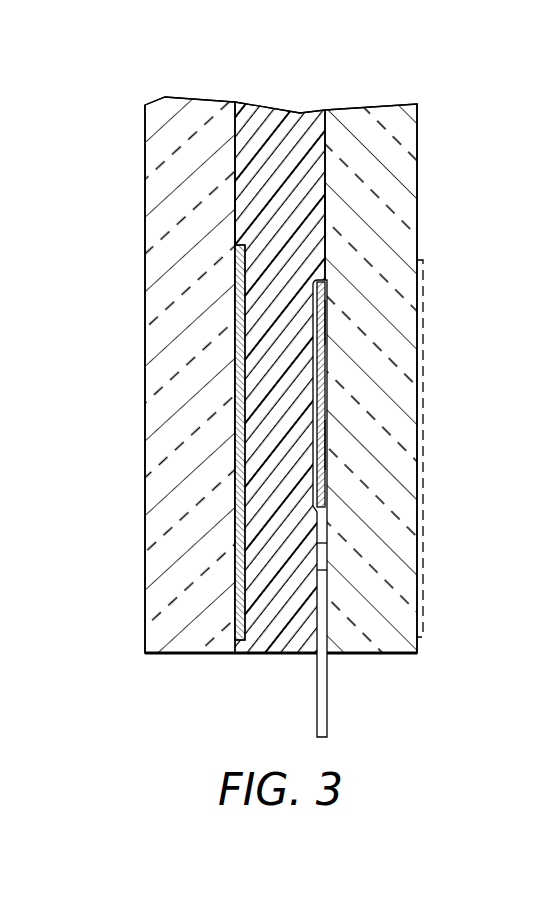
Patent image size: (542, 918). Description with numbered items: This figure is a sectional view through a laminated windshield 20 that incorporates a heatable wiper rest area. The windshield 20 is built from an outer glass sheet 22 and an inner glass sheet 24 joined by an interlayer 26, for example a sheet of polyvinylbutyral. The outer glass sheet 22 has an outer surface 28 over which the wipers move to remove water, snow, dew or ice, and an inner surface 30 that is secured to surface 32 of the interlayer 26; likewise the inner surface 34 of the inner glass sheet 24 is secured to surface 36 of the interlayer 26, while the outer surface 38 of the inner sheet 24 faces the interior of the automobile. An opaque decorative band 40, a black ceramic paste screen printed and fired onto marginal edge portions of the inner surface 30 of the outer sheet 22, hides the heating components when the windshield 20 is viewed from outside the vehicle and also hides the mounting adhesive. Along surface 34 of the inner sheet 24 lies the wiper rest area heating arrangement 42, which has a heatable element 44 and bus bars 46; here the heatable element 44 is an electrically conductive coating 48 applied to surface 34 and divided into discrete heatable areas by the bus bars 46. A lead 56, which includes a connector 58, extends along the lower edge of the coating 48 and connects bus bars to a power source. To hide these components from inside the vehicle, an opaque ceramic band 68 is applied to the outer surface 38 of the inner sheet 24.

The windshield 20 is at (148, 683).
The outer glass sheet 22 is at (190, 106).
The inner glass sheet 24 is at (382, 108).
The interlayer 26 is at (275, 111).
The outer surface 28 is at (145, 134).
The inner surface 30 is at (234, 187).
The surface of the interlayer 32 is at (235, 230).
The inner surface 34 is at (330, 150).
The surface of the interlayer 36 is at (325, 208).
The outer surface 38 is at (417, 222).
The opaque decorative band 40 is at (238, 278).
The wiper rest area heating arrangement 42 is at (342, 320).
The heatable element 44 is at (325, 372).
The bus bars 46 is at (300, 335).
The electrically conductive coating 48 is at (325, 446).
The lead 56 is at (312, 556).
The connector 58 is at (327, 697).
The ceramic band 68 is at (425, 292).